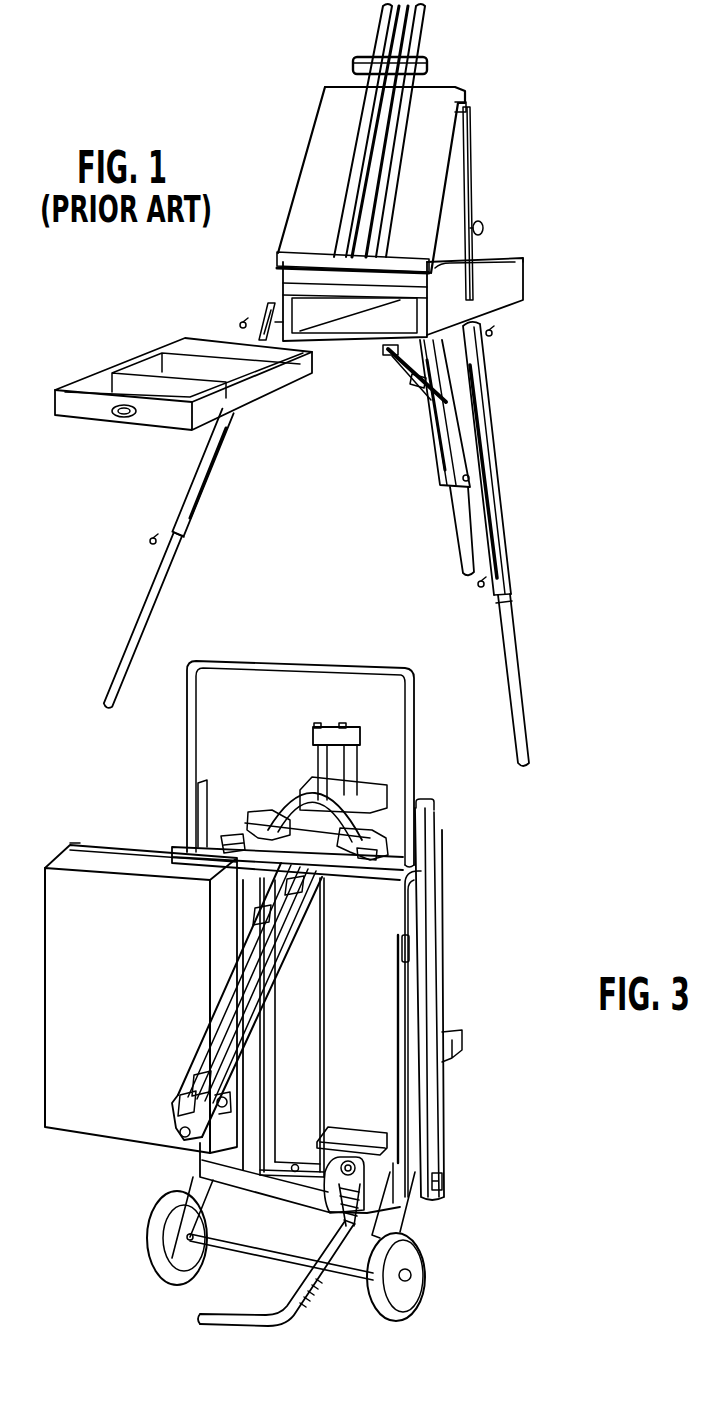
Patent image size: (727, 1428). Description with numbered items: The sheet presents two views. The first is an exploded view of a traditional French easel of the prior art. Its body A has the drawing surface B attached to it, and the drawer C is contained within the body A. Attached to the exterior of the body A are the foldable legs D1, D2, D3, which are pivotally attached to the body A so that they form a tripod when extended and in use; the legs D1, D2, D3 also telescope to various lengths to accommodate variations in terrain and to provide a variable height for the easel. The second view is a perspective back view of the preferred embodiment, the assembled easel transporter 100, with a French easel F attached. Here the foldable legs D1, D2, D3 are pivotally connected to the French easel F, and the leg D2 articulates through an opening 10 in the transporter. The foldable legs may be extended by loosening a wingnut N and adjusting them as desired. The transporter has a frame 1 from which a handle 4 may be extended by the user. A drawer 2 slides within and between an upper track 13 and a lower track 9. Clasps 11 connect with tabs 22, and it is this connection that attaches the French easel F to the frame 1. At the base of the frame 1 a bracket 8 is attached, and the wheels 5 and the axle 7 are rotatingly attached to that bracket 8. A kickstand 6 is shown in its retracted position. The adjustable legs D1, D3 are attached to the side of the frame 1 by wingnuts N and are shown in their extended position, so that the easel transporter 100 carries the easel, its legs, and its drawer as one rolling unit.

In FIG. 1, the body A is at (527, 272).
In FIG. 1, the drawing surface B is at (467, 90).
In FIG. 1, the drawer C is at (120, 366).
In FIG. 1, the foldable leg D1 is at (498, 456).
In FIG. 3, the foldable leg D1 is at (440, 1104).
In FIG. 1, the foldable leg D2 is at (432, 455).
In FIG. 3, the foldable leg D2 is at (197, 1040).
In FIG. 1, the foldable leg D3 is at (216, 480).
In FIG. 3, the foldable leg D3 is at (196, 798).
In FIG. 3, the frame 1 is at (422, 887).
In FIG. 3, the drawer 2 is at (106, 845).
In FIG. 3, the handle 4 is at (350, 661).
In FIG. 3, the wheels 5 is at (150, 1238).
In FIG. 3, the kickstand 6 is at (306, 1310).
In FIG. 3, the axle 7 is at (252, 1257).
In FIG. 3, the bracket 8 is at (410, 1212).
In FIG. 3, the lower track 9 is at (366, 1127).
In FIG. 3, the opening 10 is at (295, 1047).
In FIG. 3, the clasps 11 is at (228, 835).
In FIG. 3, the upper track 13 is at (362, 880).
In FIG. 3, the tabs 22 is at (247, 812).
In FIG. 3, the easel transporter 100 is at (510, 1127).
In FIG. 3, the French easel F is at (444, 968).
In FIG. 3, the wingnut N is at (231, 1101).